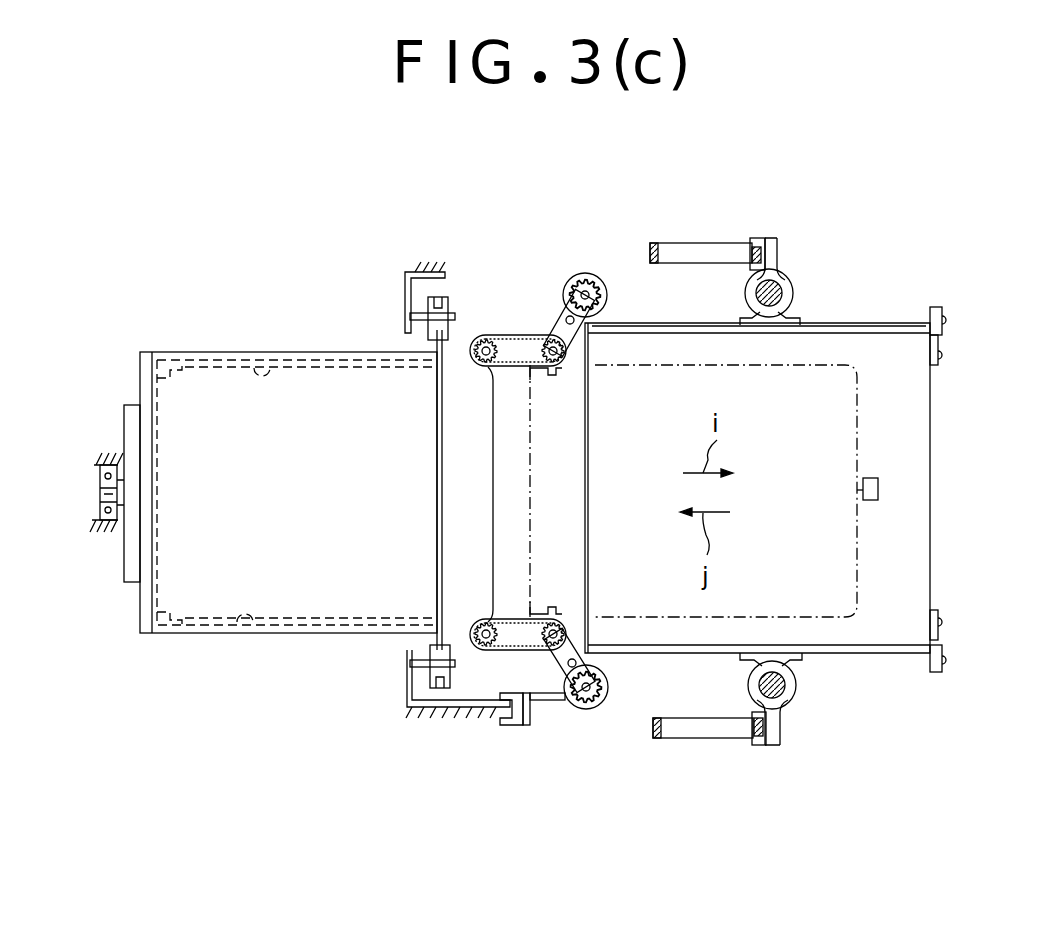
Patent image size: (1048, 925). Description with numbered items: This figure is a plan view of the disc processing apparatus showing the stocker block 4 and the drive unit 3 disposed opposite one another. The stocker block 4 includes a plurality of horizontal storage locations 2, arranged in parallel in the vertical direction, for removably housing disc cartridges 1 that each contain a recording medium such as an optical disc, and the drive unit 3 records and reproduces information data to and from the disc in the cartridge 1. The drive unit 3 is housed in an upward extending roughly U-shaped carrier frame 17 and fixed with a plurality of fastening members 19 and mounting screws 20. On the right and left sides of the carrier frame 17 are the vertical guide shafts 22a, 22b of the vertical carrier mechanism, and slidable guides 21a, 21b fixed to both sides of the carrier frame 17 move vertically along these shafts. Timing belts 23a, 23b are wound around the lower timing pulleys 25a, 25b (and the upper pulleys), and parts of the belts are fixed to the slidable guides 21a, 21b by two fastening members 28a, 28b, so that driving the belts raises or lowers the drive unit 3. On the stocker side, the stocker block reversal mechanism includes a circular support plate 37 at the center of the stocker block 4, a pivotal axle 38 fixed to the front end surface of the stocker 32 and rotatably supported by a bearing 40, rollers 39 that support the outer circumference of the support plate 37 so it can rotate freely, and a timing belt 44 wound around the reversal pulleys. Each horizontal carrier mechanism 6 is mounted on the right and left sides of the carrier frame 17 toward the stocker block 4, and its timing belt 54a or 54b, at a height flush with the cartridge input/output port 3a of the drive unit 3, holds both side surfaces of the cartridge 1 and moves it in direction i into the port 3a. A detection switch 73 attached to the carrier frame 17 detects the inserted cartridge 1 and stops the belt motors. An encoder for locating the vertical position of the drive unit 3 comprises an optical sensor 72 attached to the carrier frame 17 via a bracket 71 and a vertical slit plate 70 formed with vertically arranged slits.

The disc cartridge 1 is at (860, 565).
The storage location 2 is at (275, 352).
The drive unit 3 is at (935, 425).
The cartridge input/output port 3a is at (565, 423).
The stocker block 4 is at (218, 348).
The horizontal carrier mechanism 6 is at (529, 300).
The carrier frame 17 is at (895, 323).
The fastening member 19 is at (940, 355).
The mounting screw 20 is at (945, 318).
The slidable guide 21a is at (780, 720).
The slidable guide 21b is at (775, 265).
The vertical guide shaft 22a is at (785, 685).
The vertical guide shaft 22b is at (790, 290).
The timing belt 23a is at (768, 738).
The timing belt 23b is at (780, 245).
The timing pulley 25a is at (690, 730).
The timing pulley 25b is at (672, 250).
The fastening member 28a is at (757, 745).
The fastening member 28b is at (756, 245).
The stocker 32 is at (170, 352).
The circular support plate 37 is at (437, 485).
The pivotal axle 38 is at (100, 488).
The roller 39 is at (430, 310).
The bearing 40 is at (100, 517).
The timing belt 44 is at (130, 410).
The timing belt 54a is at (487, 620).
The timing belt 54b is at (490, 368).
The vertical slit plate 70 is at (455, 715).
The bracket 71 is at (552, 703).
The optical sensor 72 is at (510, 730).
The detection switch 73 is at (880, 490).